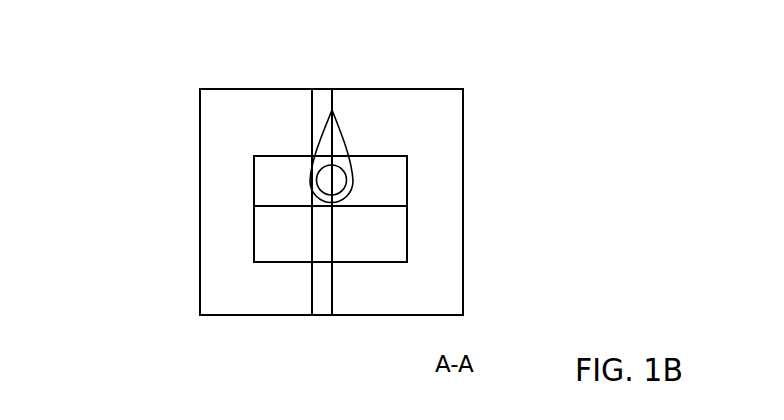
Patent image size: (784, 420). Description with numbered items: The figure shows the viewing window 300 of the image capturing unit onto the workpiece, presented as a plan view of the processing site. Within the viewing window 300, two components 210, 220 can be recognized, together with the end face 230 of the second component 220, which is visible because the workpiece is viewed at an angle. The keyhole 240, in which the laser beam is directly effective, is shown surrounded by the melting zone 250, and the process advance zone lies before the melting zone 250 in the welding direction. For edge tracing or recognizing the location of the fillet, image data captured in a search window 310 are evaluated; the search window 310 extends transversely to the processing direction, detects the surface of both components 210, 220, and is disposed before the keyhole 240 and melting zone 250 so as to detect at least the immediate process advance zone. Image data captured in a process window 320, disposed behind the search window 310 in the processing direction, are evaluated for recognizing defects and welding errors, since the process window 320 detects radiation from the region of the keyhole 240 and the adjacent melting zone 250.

The viewing window 300 is at (130, 323).
The first component 210 is at (423, 129).
The second component 220 is at (237, 115).
The end face 230 is at (318, 100).
The keyhole 240 is at (337, 182).
The melting zone 250 is at (349, 138).
The search window 310 is at (254, 238).
The process window 320 is at (254, 177).